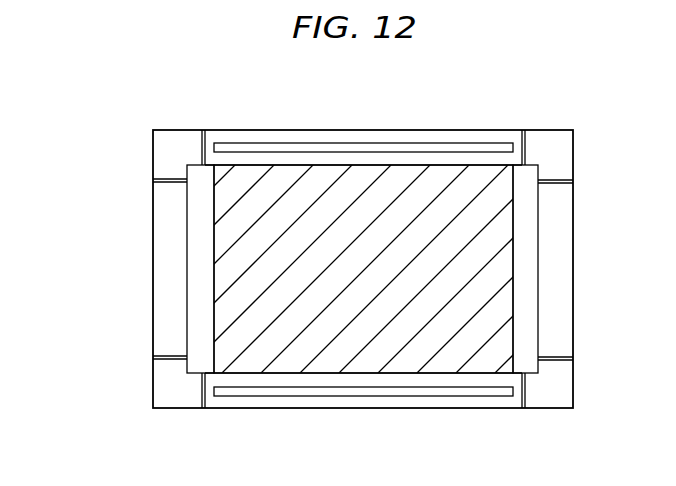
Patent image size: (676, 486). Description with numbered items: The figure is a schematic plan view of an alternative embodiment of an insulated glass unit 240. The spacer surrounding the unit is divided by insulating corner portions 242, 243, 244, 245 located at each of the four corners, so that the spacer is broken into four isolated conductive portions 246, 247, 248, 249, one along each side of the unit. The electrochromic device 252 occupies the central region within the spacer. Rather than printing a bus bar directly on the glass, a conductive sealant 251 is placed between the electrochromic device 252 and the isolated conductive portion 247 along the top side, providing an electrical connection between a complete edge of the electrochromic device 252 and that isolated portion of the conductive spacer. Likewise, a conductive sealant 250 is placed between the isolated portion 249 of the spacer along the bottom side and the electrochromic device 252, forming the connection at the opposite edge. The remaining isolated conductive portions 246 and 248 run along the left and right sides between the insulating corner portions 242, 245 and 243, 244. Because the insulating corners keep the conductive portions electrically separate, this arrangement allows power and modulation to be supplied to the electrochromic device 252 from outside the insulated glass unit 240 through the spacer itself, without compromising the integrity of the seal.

The insulated glass unit 240 is at (114, 106).
The insulating corner portion 242 is at (162, 164).
The insulating corner portion 243 is at (565, 153).
The insulating corner portion 244 is at (565, 393).
The insulating corner portion 245 is at (162, 394).
The isolated conductive portion 246 is at (172, 323).
The isolated conductive portion 247 is at (412, 137).
The isolated conductive portion 248 is at (565, 282).
The isolated conductive portion 249 is at (412, 402).
The conductive sealant 250 is at (468, 397).
The conductive sealant 251 is at (470, 143).
The electrochromic device 252 is at (228, 270).